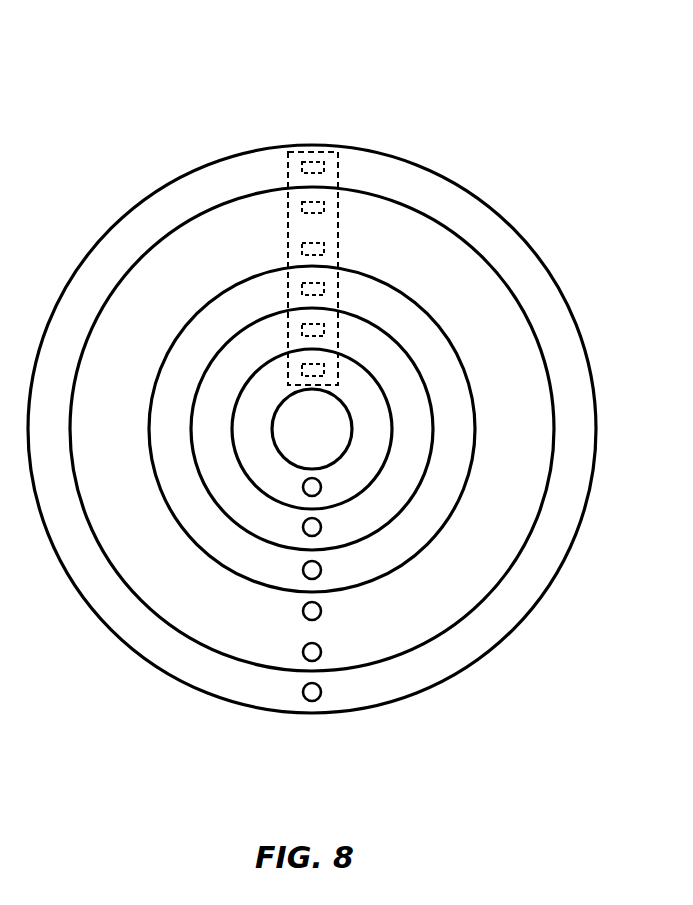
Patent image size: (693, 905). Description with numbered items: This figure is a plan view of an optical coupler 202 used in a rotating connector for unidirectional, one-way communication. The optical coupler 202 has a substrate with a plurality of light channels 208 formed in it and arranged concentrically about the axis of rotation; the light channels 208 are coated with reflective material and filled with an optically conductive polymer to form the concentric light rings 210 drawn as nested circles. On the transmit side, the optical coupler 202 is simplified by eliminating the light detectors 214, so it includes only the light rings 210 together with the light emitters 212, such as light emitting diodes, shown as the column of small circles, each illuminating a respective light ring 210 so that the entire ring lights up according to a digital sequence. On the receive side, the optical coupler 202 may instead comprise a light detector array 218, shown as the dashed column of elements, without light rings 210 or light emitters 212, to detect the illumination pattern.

The optical coupler 202 is at (372, 100).
The light channels 208 is at (557, 290).
The light rings 210 is at (453, 207).
The light emitters 212 is at (320, 692).
The light detectors 214 is at (310, 200).
The light detector array 218 is at (325, 150).